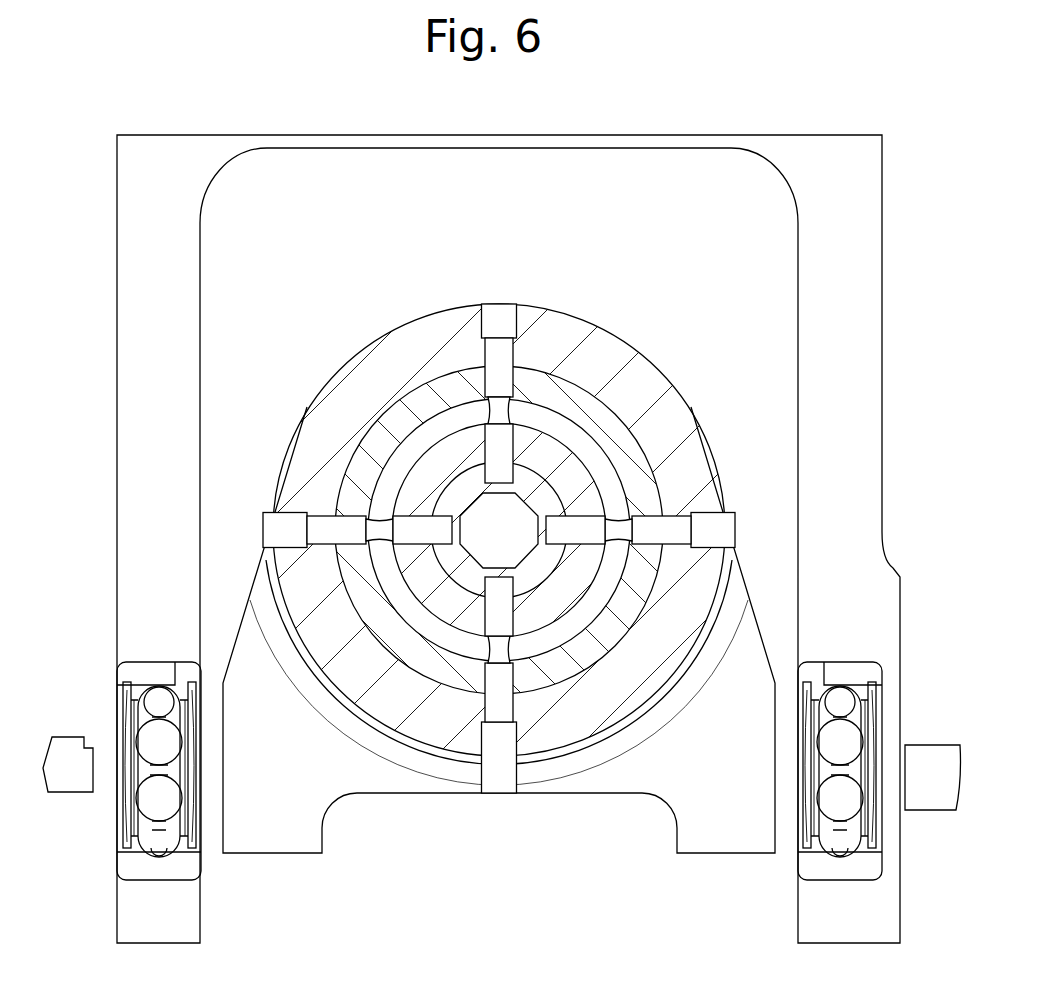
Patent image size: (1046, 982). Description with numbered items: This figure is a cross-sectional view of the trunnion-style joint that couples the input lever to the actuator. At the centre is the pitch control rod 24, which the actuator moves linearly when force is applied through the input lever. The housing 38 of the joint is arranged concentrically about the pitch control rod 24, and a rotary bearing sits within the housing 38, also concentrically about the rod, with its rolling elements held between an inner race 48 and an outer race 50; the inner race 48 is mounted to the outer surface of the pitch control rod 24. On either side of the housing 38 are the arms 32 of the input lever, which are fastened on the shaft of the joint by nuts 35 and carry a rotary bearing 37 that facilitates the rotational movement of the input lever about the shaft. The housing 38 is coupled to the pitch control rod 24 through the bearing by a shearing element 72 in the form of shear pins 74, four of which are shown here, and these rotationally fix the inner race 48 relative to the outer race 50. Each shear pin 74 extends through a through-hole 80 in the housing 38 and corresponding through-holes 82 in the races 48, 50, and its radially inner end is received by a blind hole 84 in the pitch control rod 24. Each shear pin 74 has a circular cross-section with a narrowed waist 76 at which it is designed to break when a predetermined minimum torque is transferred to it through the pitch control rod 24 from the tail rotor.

The pitch control rod 24 is at (733, 550).
The arms 32 is at (142, 250).
The nuts 35 is at (70, 752).
The rotary bearing 37 is at (148, 840).
The housing 38 is at (362, 373).
The inner race 48 is at (422, 482).
The outer race 50 is at (565, 670).
The shearing element 72 is at (481, 571).
The shear pins 74 is at (481, 571).
The narrowed waist 76 is at (507, 412).
The through-hole 80 is at (270, 535).
The through-holes 82 is at (503, 410).
The blind hole 84 is at (440, 566).